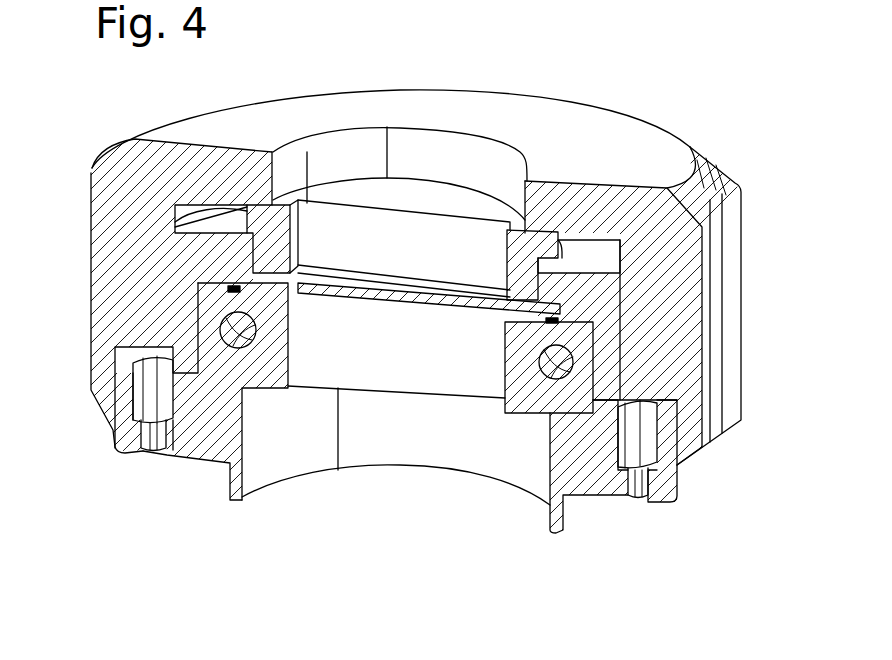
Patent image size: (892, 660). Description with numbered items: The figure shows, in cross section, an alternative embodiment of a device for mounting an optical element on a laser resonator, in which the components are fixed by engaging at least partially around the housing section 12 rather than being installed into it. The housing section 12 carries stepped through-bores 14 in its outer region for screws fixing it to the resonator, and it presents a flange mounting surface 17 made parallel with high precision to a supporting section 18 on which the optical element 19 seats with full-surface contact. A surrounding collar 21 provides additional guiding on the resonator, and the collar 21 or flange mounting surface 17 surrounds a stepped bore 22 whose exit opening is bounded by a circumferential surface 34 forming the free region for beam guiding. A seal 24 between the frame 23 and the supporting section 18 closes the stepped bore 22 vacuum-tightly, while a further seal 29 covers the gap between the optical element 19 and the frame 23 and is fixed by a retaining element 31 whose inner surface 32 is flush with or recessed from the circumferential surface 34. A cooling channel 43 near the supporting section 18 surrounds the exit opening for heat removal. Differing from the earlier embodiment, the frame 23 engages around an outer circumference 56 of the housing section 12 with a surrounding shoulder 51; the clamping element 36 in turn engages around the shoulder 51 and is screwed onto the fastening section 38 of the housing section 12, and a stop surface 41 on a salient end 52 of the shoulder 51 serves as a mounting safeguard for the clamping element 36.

The housing section 12 is at (183, 445).
The stepped through-bores 14 is at (153, 437).
The flange mounting surface 17 is at (573, 496).
The supporting section 18 is at (275, 302).
The optical element 19 is at (393, 307).
The surrounding collar 21 is at (555, 533).
The stepped bore 22 is at (320, 500).
The frame 23 is at (600, 290).
The seal 24 is at (548, 323).
The seal 29 is at (510, 297).
The retaining element 31 is at (268, 207).
The inner surface 32 is at (400, 236).
The circumferential surface 34 is at (300, 440).
The clamping element 36 is at (722, 192).
The fastening section 38 is at (105, 432).
The stop surface 41 is at (617, 423).
The cooling channel 43 is at (238, 348).
The shoulder 51 is at (613, 367).
The salient end 52 is at (687, 420).
The outer circumference 56 is at (188, 329).